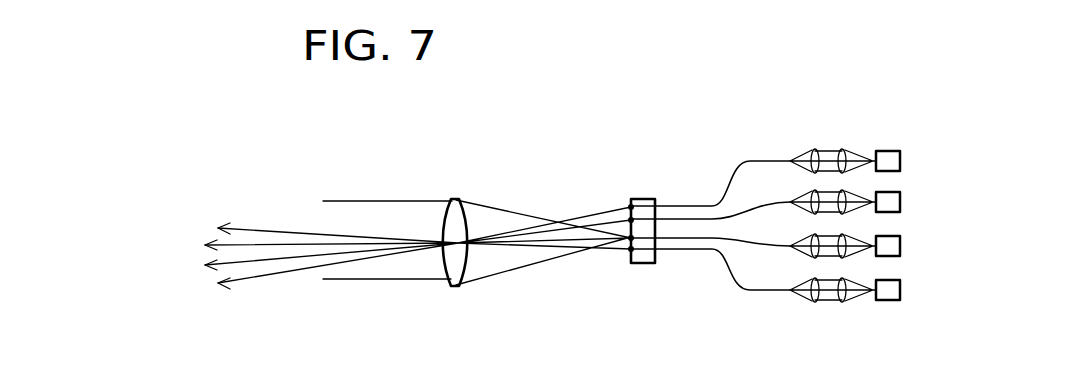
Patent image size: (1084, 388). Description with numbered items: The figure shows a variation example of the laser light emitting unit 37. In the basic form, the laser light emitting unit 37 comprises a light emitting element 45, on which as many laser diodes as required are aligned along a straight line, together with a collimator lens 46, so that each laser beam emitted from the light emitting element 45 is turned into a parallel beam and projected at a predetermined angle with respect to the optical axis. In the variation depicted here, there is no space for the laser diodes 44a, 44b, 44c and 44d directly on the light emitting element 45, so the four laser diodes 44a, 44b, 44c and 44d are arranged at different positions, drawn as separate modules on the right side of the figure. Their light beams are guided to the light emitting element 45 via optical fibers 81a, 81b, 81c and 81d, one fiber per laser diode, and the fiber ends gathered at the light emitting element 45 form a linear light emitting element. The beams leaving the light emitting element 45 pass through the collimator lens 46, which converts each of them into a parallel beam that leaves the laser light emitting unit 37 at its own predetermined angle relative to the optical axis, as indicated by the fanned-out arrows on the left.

The laser light emitting unit 37 is at (568, 78).
The collimator lens 46 is at (454, 198).
The light emitting element 45 is at (645, 199).
The optical fiber 81a is at (688, 207).
The optical fiber 81b is at (684, 220).
The optical fiber 81c is at (702, 240).
The optical fiber 81d is at (752, 293).
The laser diode 44a is at (888, 150).
The laser diode 44b is at (896, 191).
The laser diode 44c is at (896, 235).
The laser diode 44d is at (888, 302).